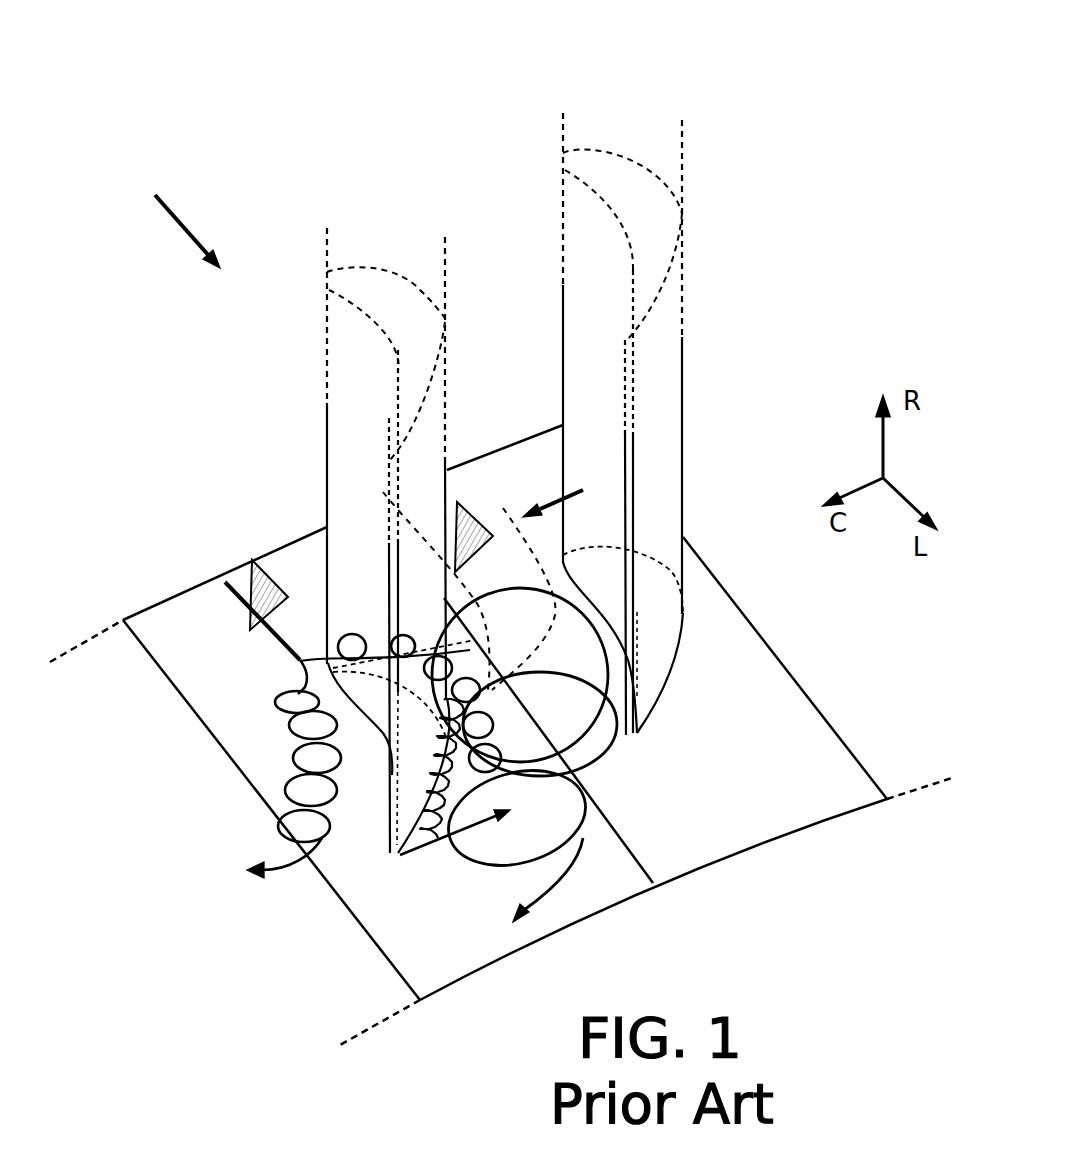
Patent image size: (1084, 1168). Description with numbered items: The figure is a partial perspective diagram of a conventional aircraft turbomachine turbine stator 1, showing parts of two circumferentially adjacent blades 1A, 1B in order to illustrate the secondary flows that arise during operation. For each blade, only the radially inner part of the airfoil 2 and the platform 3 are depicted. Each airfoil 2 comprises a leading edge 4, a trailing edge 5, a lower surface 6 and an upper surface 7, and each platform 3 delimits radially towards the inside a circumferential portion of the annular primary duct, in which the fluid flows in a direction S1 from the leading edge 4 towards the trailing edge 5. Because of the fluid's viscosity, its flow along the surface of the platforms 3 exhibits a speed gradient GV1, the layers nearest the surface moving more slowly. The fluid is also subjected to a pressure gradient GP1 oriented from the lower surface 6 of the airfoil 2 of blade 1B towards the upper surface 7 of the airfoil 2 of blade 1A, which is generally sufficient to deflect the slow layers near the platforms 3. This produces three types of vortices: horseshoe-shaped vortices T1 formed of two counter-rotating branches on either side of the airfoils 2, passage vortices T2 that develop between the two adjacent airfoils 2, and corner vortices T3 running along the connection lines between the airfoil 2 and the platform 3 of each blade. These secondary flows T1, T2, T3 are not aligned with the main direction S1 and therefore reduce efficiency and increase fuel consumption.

The turbine stator 1 is at (510, 54).
The blade 1A is at (366, 200).
The blade 1B is at (575, 106).
The airfoil 2 is at (400, 296).
The platform 3 is at (788, 812).
The leading edge 4 is at (327, 433).
The trailing edge 5 is at (388, 543).
The lower surface 6 is at (370, 382).
The upper surface 7 is at (433, 437).
The speed gradient GV1 is at (252, 580).
The pressure gradient GP1 is at (545, 510).
The direction of fluid flow S1 is at (190, 196).
The horseshoe-shaped vortices T1 is at (347, 633).
The passage vortices T2 is at (614, 770).
The corner vortices T3 is at (406, 858).